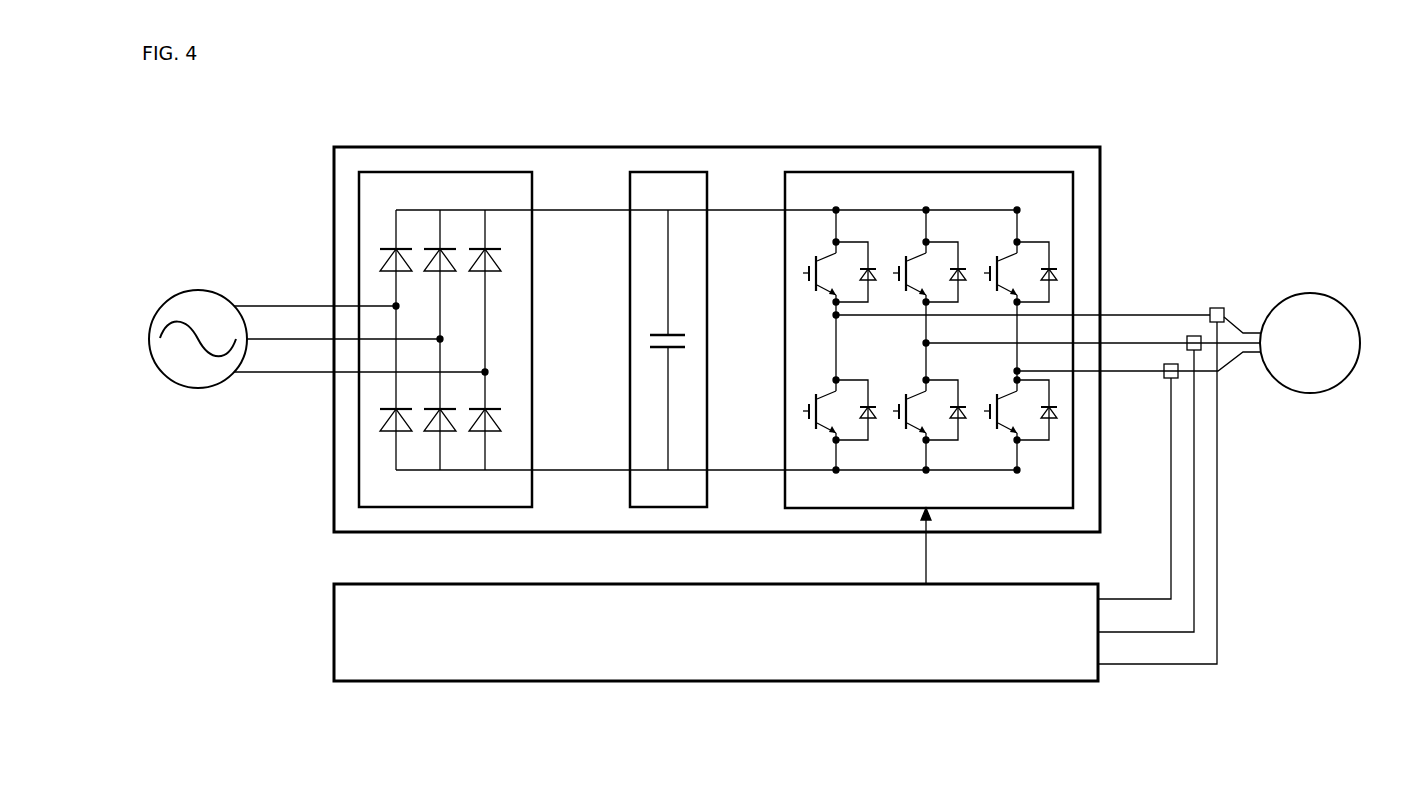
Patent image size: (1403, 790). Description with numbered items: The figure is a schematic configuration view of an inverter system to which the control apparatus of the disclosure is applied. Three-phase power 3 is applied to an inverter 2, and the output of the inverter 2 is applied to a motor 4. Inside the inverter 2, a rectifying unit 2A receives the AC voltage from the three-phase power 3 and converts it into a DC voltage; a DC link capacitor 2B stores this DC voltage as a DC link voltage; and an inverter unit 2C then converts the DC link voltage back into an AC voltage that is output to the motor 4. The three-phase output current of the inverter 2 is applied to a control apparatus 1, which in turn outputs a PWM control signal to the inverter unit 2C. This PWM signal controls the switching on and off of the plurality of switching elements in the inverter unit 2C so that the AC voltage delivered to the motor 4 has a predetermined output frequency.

The control apparatus 1 is at (334, 630).
The inverter 2 is at (1021, 146).
The rectifying unit 2A is at (446, 171).
The DC link capacitor 2B is at (668, 171).
The inverter unit 2C is at (930, 171).
The three-phase power 3 is at (199, 290).
The motor 4 is at (1310, 293).